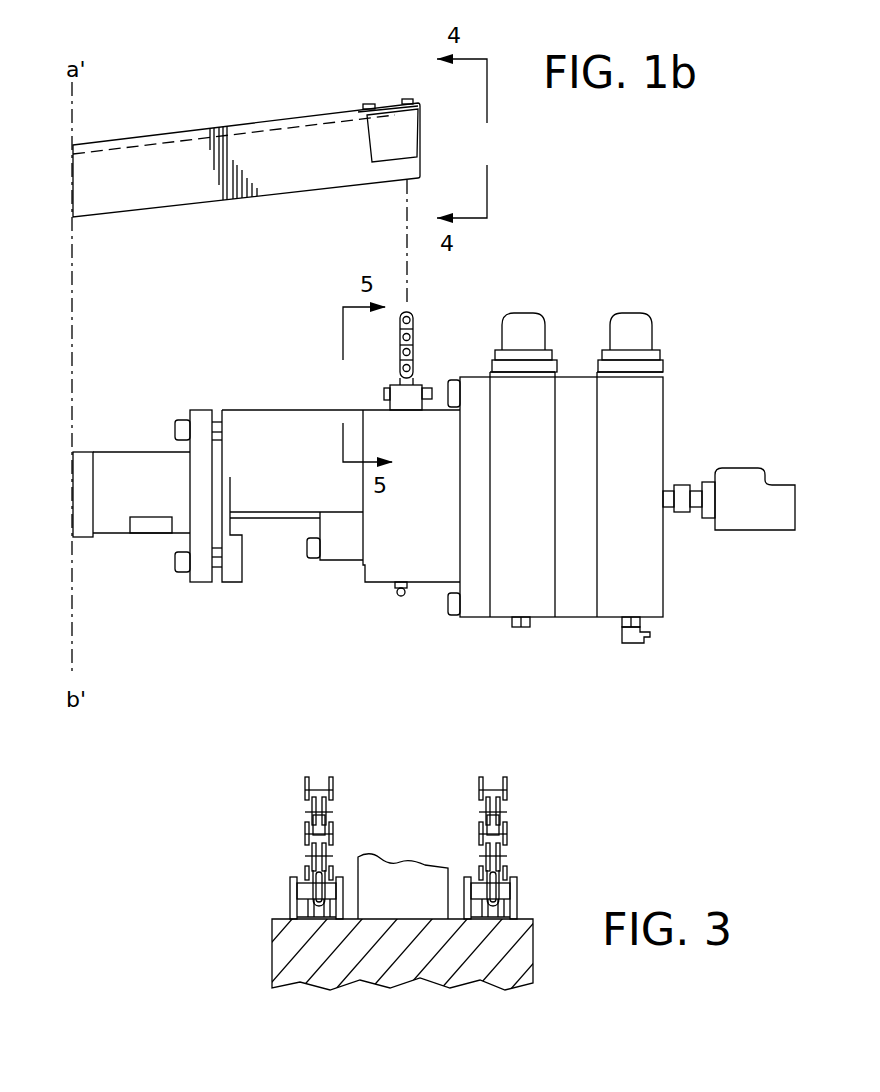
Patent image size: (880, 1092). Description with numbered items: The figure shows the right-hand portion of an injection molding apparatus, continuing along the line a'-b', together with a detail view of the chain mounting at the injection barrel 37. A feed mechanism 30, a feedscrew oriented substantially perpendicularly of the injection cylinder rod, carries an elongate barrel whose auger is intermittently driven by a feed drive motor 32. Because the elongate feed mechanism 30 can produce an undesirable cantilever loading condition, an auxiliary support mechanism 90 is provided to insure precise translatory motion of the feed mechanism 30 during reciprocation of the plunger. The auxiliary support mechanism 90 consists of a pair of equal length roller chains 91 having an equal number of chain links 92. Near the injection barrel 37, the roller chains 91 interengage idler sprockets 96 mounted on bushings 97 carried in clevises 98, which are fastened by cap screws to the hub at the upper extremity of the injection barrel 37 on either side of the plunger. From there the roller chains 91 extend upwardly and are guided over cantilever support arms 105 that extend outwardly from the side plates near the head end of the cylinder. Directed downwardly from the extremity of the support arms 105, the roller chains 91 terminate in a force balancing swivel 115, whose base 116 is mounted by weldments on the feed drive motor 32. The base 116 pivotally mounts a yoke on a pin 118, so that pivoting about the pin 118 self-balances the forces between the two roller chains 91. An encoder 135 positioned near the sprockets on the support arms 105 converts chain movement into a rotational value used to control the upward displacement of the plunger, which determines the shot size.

In FIG. 1b, the feed mechanism 30 is at (196, 592).
In FIG. 1b, the feed drive motor 32 is at (355, 591).
In FIG. 3, the injection barrel 37 is at (283, 962).
In FIG. 1b, the auxiliary support mechanism 90 is at (445, 323).
In FIG. 1b, the roller chains 91 is at (415, 328).
In FIG. 3, the roller chains 91 is at (335, 793).
In FIG. 3, the chain links 92 is at (335, 826).
In FIG. 3, the idler sprockets 96 is at (317, 878).
In FIG. 3, the bushings 97 is at (305, 890).
In FIG. 3, the clevises 98 is at (290, 910).
In FIG. 1b, the cantilever support arms 105 is at (278, 145).
In FIG. 1b, the force balancing swivel 115 is at (370, 400).
In FIG. 1b, the base 116 is at (405, 413).
In FIG. 1b, the pin 118 is at (382, 392).
In FIG. 1b, the encoder 135 is at (375, 132).